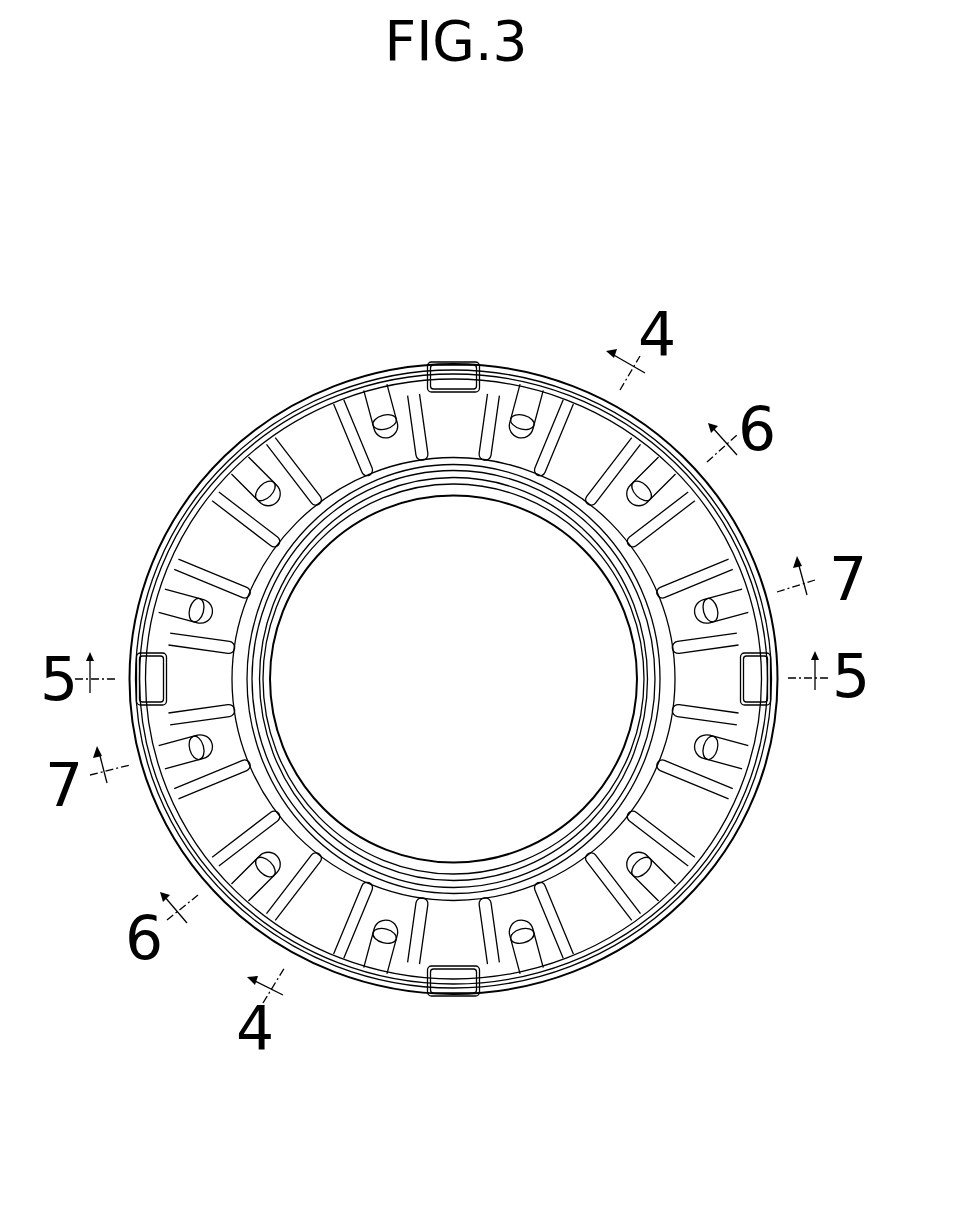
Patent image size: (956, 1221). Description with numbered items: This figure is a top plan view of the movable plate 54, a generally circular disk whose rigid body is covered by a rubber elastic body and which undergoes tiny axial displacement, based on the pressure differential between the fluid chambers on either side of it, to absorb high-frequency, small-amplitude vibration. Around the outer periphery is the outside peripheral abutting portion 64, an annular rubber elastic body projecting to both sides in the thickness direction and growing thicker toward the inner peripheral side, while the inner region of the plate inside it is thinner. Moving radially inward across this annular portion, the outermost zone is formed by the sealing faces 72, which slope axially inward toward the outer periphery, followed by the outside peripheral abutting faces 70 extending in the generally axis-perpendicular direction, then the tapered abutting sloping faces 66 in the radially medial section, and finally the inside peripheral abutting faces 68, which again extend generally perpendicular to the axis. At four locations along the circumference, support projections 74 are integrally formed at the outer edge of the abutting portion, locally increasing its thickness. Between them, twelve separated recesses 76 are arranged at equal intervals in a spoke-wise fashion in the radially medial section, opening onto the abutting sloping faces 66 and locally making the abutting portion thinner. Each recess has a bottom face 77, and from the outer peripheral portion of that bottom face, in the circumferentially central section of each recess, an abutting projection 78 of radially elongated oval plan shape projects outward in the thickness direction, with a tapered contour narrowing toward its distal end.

The movable plate 54 is at (174, 489).
The outside peripheral abutting portion 64 is at (730, 842).
The abutting sloping faces 66 is at (305, 450).
The inside peripheral abutting faces 68 is at (547, 852).
The outside peripheral abutting faces 70 is at (677, 870).
The sealing faces 72 is at (702, 862).
The support projections 74 is at (452, 375).
The separated recesses 76 is at (407, 413).
The bottom faces 77 is at (370, 398).
The abutting projections 78 is at (378, 402).